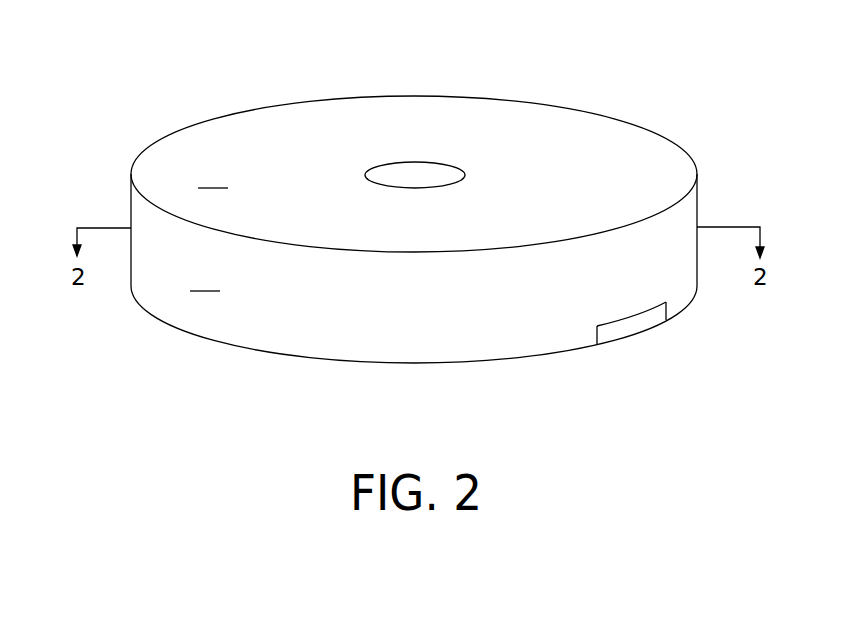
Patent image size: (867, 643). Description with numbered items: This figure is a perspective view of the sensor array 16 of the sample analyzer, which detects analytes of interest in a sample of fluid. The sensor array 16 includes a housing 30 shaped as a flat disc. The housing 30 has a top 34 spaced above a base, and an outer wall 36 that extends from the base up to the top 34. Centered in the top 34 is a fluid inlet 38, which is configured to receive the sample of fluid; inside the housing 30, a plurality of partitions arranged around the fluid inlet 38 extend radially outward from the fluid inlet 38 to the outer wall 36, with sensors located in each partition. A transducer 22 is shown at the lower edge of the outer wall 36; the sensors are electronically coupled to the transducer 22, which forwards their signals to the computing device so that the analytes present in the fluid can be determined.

The sensor array 16 is at (385, 212).
The housing 30 is at (414, 153).
The top 34 is at (292, 119).
The outer wall 36 is at (414, 268).
The fluid inlet 38 is at (420, 174).
The transducer 22 is at (623, 327).